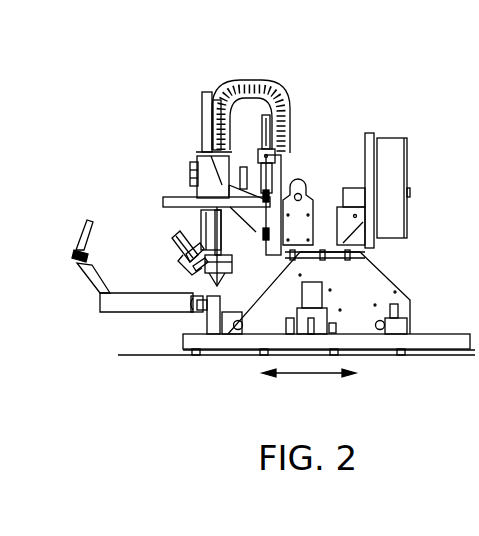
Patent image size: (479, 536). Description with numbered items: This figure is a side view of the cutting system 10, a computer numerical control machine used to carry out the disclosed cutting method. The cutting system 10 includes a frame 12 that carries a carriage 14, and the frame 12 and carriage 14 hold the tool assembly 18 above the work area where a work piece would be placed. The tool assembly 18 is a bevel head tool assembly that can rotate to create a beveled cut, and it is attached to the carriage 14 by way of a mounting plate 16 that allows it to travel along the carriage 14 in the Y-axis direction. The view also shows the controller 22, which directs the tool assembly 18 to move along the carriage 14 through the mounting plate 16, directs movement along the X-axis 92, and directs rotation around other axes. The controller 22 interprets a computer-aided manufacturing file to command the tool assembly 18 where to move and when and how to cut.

The cutting system 10 is at (393, 95).
The frame 12 is at (388, 274).
The carriage 14 is at (284, 188).
The mounting plate 16 is at (258, 184).
The tool assembly 18 is at (170, 265).
The controller 22 is at (83, 222).
The X-axis 92 is at (308, 376).